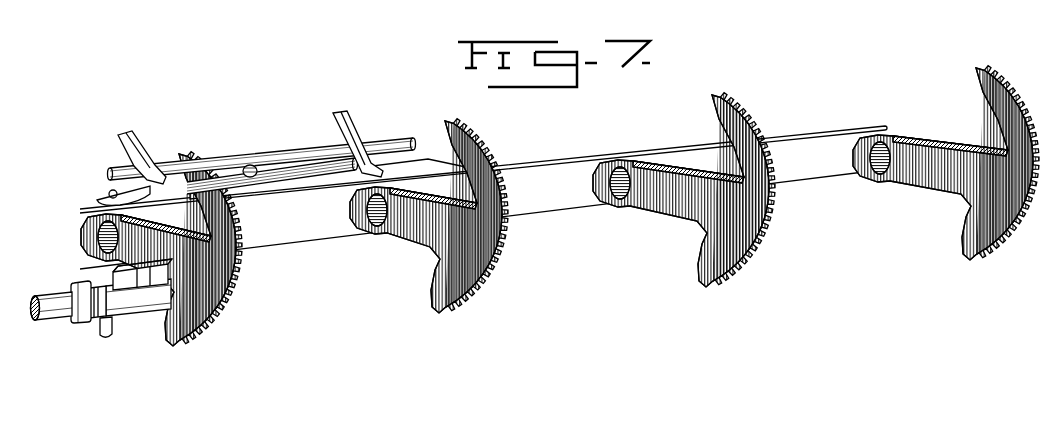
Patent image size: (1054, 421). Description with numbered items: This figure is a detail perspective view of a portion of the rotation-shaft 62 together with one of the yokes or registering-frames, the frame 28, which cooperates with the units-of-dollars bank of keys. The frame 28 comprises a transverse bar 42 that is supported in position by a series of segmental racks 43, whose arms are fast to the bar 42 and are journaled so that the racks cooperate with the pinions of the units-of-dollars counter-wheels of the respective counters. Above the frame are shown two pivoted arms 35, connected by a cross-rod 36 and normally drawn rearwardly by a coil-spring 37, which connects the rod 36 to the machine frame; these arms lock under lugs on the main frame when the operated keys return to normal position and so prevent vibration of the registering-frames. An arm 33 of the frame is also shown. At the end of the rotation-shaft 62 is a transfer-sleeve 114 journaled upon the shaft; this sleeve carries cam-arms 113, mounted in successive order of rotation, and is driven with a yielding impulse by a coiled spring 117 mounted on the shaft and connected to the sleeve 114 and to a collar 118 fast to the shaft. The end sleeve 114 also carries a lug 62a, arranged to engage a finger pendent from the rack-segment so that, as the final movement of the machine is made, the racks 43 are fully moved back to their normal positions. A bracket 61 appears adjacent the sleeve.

The frame 28 is at (417, 156).
The arm 33 is at (338, 128).
The pivoted arms 35 is at (146, 150).
The cross-rod 36 is at (287, 152).
The coil-spring 37 is at (248, 165).
The transverse bar 42 is at (483, 197).
The segmental racks 43 is at (964, 212).
The bracket 61 is at (138, 272).
The rotation-shaft 62 is at (44, 296).
The lug 62a is at (132, 268).
The cam-arms 113 is at (110, 335).
The sleeve 114 is at (152, 312).
The coiled spring 117 is at (100, 318).
The collar 118 is at (78, 288).